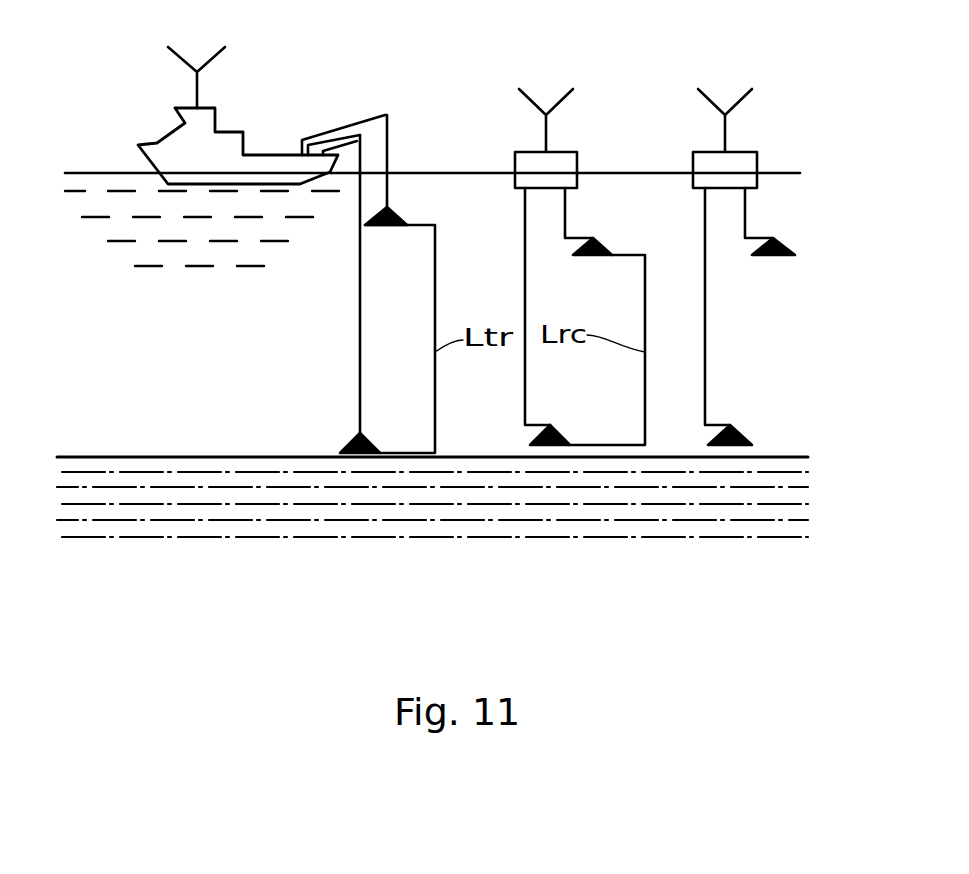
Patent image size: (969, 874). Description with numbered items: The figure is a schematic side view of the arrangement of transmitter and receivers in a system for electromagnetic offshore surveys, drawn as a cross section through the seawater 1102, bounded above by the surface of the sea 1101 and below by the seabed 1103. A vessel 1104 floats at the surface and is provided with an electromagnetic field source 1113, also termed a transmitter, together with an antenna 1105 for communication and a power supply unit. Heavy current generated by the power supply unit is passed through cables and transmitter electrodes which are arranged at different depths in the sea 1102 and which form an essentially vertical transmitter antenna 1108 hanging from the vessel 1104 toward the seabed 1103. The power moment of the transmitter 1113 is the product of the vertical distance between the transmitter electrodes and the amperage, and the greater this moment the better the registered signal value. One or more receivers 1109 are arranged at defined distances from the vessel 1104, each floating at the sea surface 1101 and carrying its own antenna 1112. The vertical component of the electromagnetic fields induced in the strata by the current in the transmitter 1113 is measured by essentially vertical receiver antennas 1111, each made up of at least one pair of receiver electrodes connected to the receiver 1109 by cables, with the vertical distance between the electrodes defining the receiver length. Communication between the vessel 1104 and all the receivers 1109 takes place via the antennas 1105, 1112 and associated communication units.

The surface of the sea 1101 is at (107, 173).
The seawater 1102 is at (160, 266).
The seabed 1103 is at (143, 457).
The vessel 1104 is at (157, 143).
The antenna 1105 is at (180, 60).
The transmitter antenna 1108 is at (332, 321).
The receiver 1109 is at (596, 122).
The receiver antenna 1111 is at (507, 291).
The antenna 1112 is at (537, 112).
The electromagnetic field source 1113 is at (407, 113).